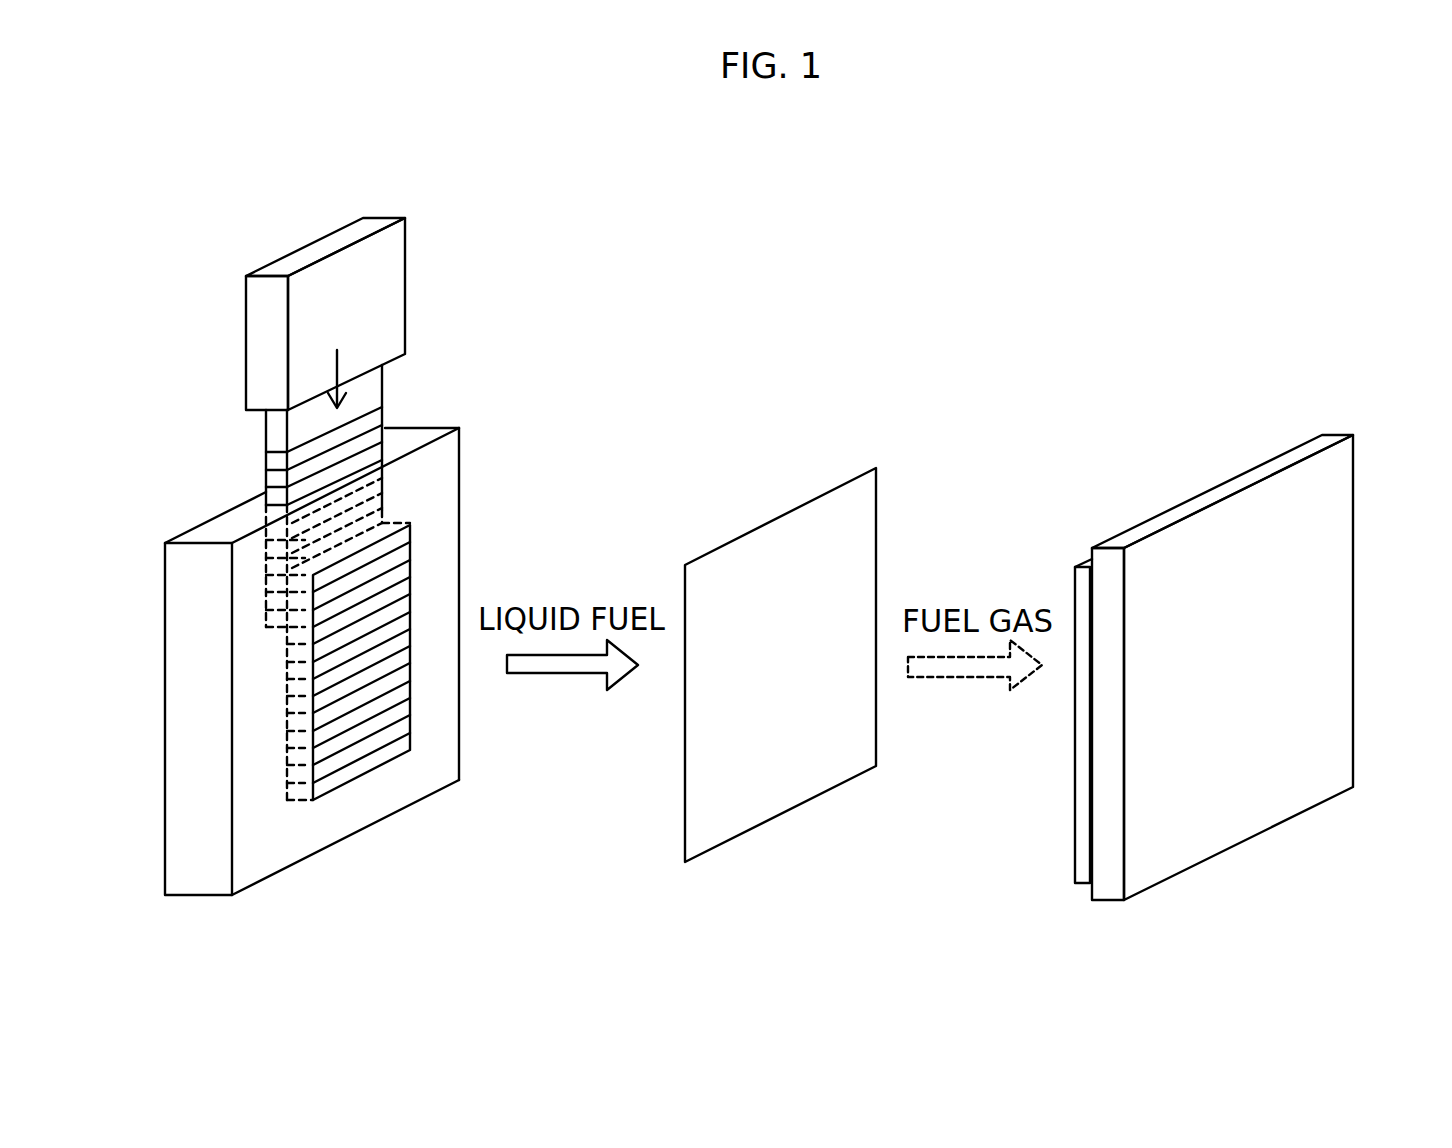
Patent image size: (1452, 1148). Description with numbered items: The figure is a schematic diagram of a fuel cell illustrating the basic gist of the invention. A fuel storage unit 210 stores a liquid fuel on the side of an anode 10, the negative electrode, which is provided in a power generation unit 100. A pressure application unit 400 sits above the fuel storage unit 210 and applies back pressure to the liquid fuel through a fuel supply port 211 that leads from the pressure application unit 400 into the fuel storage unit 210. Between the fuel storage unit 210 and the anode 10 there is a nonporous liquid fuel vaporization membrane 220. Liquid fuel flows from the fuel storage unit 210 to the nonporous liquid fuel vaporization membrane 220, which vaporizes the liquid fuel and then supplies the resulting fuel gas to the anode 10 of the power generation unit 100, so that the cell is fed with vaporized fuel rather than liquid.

The pressure application unit 400 is at (337, 275).
The fuel supply port 211 is at (370, 490).
The fuel storage unit 210 is at (367, 748).
The nonporous liquid fuel vaporization membrane 220 is at (792, 540).
The power generation unit 100 is at (1328, 603).
The anode 10 is at (1083, 839).